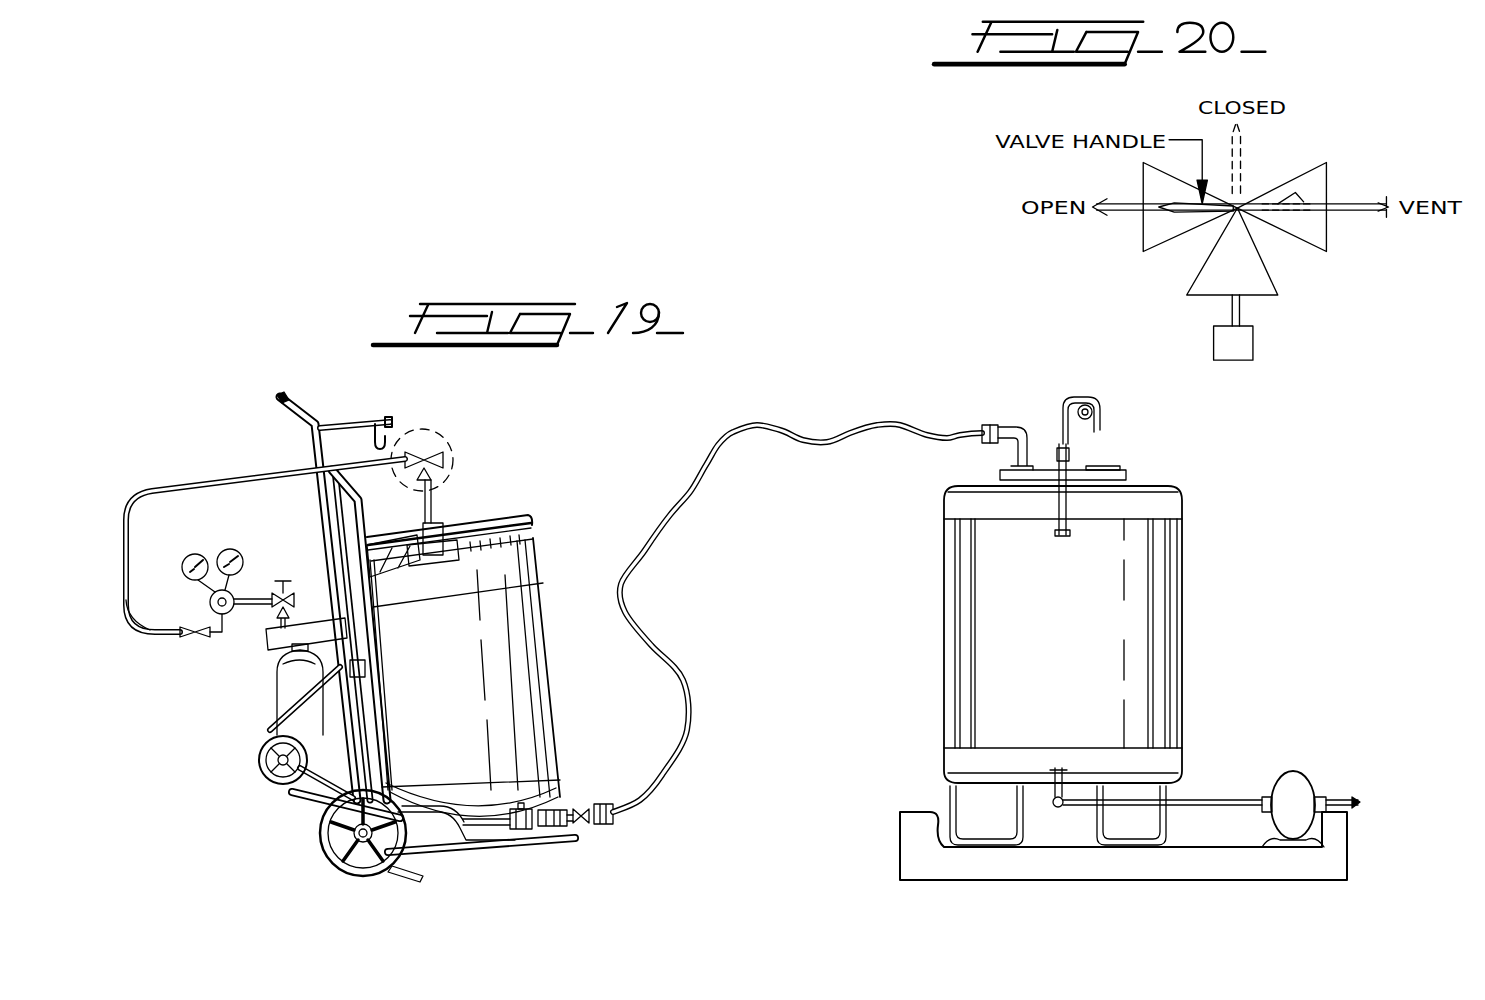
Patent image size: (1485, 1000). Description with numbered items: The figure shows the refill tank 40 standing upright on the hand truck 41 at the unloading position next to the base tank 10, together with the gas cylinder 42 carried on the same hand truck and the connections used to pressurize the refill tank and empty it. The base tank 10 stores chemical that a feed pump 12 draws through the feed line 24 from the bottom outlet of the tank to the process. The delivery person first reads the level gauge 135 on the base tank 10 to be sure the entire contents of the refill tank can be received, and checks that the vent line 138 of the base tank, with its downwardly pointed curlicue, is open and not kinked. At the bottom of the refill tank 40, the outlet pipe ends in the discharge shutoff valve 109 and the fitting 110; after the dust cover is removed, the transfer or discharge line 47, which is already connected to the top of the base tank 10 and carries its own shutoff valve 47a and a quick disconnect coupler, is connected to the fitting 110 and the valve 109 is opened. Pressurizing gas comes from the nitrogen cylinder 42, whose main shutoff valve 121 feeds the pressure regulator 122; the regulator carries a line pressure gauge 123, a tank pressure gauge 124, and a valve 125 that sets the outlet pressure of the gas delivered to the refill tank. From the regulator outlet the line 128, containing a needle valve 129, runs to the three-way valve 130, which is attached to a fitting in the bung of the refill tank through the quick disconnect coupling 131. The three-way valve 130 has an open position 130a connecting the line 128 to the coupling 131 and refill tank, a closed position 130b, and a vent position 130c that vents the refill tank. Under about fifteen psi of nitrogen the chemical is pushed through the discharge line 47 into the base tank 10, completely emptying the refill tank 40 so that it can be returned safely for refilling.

In FIG. 19, the base tank 10 is at (1185, 584).
In FIG. 19, the feed pump 12 is at (1293, 778).
In FIG. 19, the feed line 24 is at (1203, 800).
In FIG. 19, the refill tank 40 is at (542, 634).
In FIG. 19, the hand truck 41 is at (308, 456).
In FIG. 19, the gas cylinder 42 is at (268, 698).
In FIG. 19, the discharge line 47 is at (679, 513).
In FIG. 19, the shutoff valve 47a is at (602, 824).
In FIG. 19, the discharge shutoff valve 109 is at (527, 831).
In FIG. 19, the fitting 110 is at (553, 830).
In FIG. 19, the main shutoff valve 121 is at (291, 584).
In FIG. 19, the pressure regulator 122 is at (233, 613).
In FIG. 19, the line pressure gauge 123 is at (190, 555).
In FIG. 19, the tank pressure gauge 124 is at (227, 550).
In FIG. 19, the valve 125 is at (215, 630).
In FIG. 19, the line 128 is at (168, 489).
In FIG. 20, the line 128 is at (1113, 202).
In FIG. 19, the needle valve 129 is at (168, 627).
In FIG. 19, the three-way valve 130 is at (444, 433).
In FIG. 20, the three-way valve 130 is at (1190, 225).
In FIG. 20, the open position 130a is at (1215, 205).
In FIG. 20, the closed position 130b is at (1232, 156).
In FIG. 20, the vent position 130c is at (1300, 182).
In FIG. 19, the quick disconnect coupling 131 is at (440, 533).
In FIG. 20, the quick disconnect coupling 131 is at (1230, 329).
In FIG. 19, the level gauge 135 is at (1057, 506).
In FIG. 19, the vent line 138 is at (1068, 385).